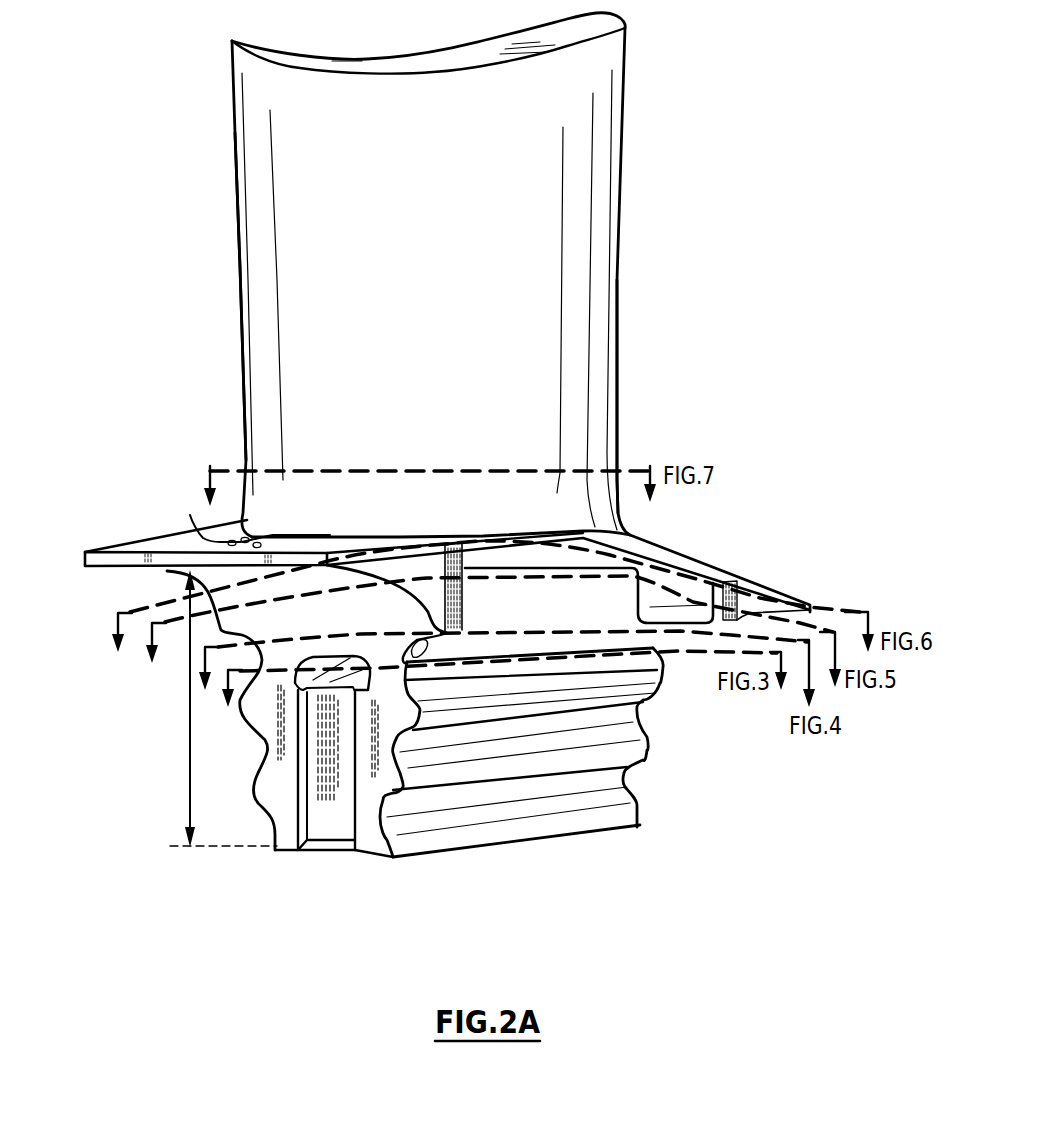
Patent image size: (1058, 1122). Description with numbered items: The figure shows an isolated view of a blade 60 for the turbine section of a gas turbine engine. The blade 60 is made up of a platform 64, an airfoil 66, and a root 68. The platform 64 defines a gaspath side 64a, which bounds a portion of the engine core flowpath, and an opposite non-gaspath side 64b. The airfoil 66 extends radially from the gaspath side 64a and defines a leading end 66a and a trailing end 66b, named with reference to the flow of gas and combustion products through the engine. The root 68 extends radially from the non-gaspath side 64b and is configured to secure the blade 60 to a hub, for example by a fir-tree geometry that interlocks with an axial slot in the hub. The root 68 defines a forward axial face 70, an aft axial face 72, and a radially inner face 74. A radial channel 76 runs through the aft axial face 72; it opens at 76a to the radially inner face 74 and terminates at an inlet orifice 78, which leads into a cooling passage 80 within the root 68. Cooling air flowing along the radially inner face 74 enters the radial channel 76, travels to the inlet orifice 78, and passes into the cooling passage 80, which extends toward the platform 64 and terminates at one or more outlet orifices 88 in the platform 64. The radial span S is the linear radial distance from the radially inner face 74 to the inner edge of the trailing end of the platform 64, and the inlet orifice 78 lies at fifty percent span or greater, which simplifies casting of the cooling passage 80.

The blade 60 is at (230, 422).
The platform 64 is at (799, 580).
The gaspath side 64a is at (163, 540).
The non-gaspath side 64b is at (167, 573).
The airfoil 66 is at (750, 2).
The leading end 66a is at (640, 134).
The trailing end 66b is at (222, 253).
The root 68 is at (84, 580).
The forward axial face 70 is at (645, 730).
The aft axial face 72 is at (375, 845).
The radially inner face 74 is at (555, 842).
The radial channel 76 is at (332, 835).
The opening of radial channel 76a is at (342, 850).
The inlet orifice 78 is at (344, 696).
The cooling passage 80 is at (330, 680).
The outlet orifices 88 is at (205, 537).
The radial span S is at (188, 723).